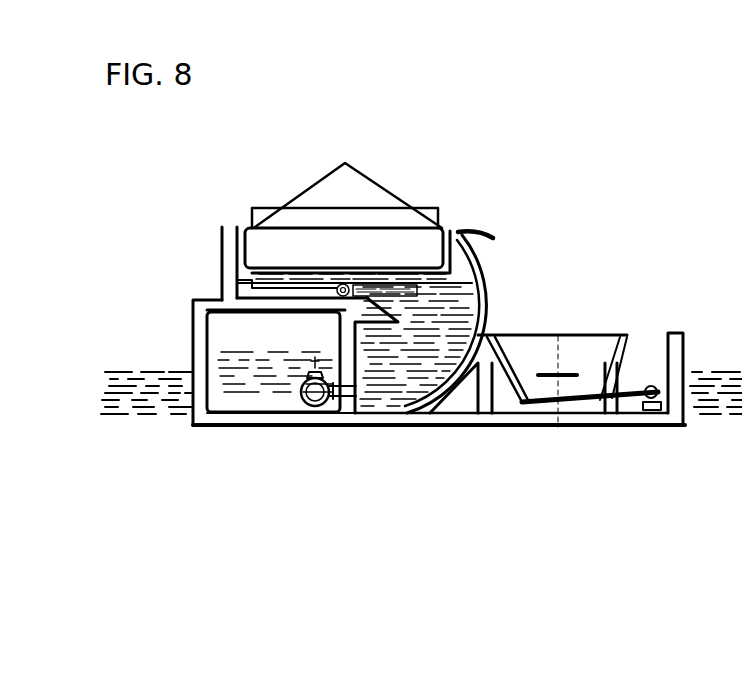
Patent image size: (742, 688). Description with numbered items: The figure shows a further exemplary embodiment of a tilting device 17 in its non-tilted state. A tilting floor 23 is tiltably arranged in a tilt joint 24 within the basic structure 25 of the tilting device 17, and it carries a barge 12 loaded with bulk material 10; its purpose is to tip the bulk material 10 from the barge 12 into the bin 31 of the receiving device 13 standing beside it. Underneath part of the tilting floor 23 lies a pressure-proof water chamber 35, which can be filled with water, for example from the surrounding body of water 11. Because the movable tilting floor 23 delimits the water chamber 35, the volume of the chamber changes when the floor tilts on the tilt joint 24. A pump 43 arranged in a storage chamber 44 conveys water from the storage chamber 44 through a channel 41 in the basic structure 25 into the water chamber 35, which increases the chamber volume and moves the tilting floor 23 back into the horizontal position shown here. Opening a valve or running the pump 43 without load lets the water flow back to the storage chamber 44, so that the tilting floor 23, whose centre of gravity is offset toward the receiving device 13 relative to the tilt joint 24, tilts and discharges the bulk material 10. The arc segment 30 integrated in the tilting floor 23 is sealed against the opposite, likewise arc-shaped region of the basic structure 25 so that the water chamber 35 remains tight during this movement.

The tilting device 17 is at (568, 154).
The bulk material 10 is at (378, 187).
The barge 12 is at (412, 238).
The tilting floor 23 is at (462, 230).
The tilt joint 24 is at (335, 291).
The basic structure 25 is at (187, 306).
The arc segment 30 is at (476, 307).
The receiving device 13 is at (577, 304).
The bin 31 is at (557, 381).
The body of water 11 is at (136, 414).
The storage chamber 44 is at (228, 392).
The pump 43 is at (294, 398).
The channel 41 is at (344, 404).
The water chamber 35 is at (400, 386).